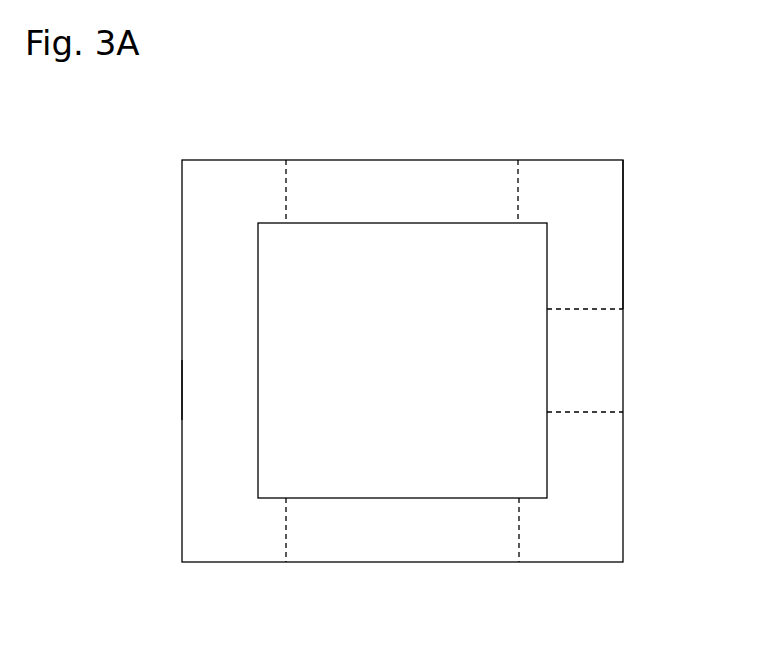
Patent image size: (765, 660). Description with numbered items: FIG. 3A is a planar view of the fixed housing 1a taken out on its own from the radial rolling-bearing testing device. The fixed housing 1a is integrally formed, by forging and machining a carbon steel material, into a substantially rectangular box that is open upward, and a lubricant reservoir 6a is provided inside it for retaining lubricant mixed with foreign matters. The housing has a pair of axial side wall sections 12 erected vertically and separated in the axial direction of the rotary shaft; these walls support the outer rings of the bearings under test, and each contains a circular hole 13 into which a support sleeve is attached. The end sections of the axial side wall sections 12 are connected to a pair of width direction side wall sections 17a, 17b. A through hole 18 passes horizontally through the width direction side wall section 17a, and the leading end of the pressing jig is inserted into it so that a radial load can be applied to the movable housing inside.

The fixed housing 1a is at (182, 218).
The lubricant reservoir 6a is at (258, 444).
The axial side wall section 12 is at (312, 177).
The circular hole 13 is at (516, 200).
The width direction side wall section 17a is at (601, 262).
The width direction side wall section 17b is at (200, 391).
The through hole 18 is at (578, 412).